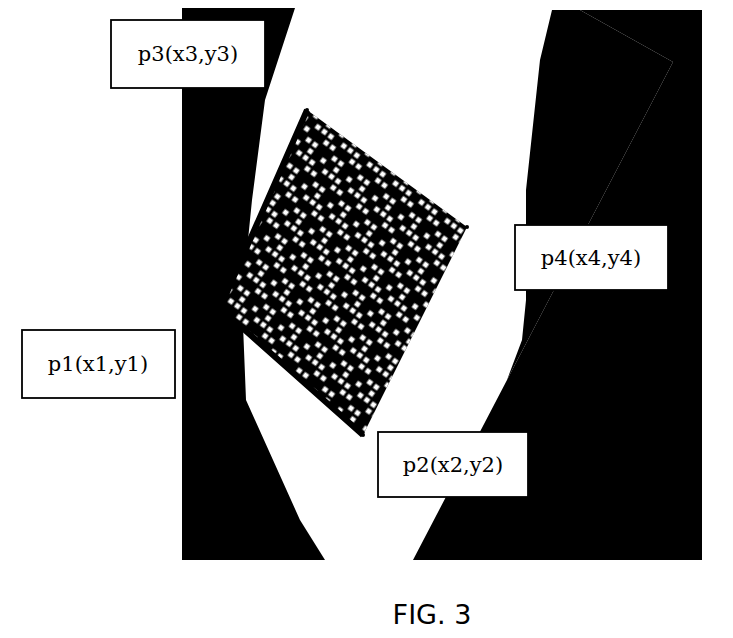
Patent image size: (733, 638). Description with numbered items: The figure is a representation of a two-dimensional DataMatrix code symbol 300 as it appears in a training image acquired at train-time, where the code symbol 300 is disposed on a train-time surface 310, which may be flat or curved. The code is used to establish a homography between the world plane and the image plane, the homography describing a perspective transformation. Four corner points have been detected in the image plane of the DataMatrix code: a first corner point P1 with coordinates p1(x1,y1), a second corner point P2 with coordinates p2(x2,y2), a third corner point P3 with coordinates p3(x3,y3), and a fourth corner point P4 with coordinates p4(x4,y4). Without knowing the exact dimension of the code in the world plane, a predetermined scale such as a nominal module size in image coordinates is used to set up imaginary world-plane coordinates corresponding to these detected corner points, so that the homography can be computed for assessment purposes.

The two-dimensional code symbol 300 is at (434, 372).
The train-time surface 310 is at (407, 132).
The first corner point P1 is at (220, 311).
The second corner point P2 is at (362, 437).
The third corner point P3 is at (305, 111).
The fourth corner point P4 is at (468, 229).